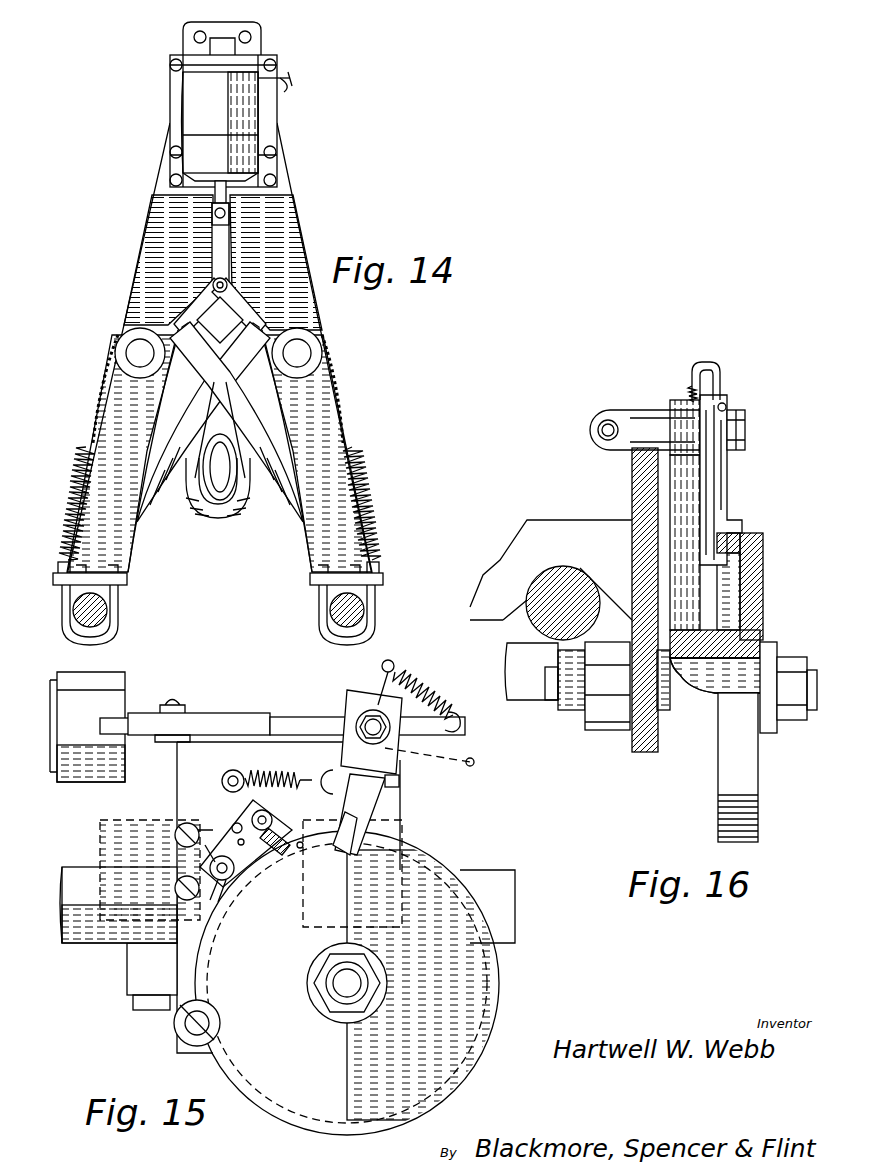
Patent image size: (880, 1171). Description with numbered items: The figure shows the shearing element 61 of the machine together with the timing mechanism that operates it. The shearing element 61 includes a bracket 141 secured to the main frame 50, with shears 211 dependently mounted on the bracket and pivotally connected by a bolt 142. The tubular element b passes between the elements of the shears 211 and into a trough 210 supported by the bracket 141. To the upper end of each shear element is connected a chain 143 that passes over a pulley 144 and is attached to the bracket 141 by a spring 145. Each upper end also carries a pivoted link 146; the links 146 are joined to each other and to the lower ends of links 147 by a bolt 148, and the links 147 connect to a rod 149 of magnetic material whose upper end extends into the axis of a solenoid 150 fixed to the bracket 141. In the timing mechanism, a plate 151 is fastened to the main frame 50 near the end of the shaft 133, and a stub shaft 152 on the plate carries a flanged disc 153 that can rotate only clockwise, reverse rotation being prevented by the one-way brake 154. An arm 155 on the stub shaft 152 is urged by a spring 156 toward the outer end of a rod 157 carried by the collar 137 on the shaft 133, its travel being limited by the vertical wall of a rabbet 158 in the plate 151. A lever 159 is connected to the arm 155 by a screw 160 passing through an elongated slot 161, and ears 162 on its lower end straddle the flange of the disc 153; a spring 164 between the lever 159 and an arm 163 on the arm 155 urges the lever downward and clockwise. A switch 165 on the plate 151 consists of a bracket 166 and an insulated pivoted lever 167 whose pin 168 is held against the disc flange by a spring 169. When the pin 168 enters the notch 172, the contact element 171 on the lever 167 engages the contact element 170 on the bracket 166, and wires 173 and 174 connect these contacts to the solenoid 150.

In FIG. 14, the shearing element 61 is at (292, 239).
In FIG. 14, the solenoid 150 is at (200, 100).
In FIG. 14, the wire 173 is at (282, 78).
In FIG. 15, the wire 173 is at (176, 838).
In FIG. 14, the wire 174 is at (286, 84).
In FIG. 15, the wire 174 is at (266, 775).
In FIG. 14, the rod 149 is at (228, 200).
In FIG. 14, the links 147 is at (224, 240).
In FIG. 14, the bolt 148 is at (213, 283).
In FIG. 14, the links 146 is at (200, 313).
In FIG. 14, the bracket 141 is at (300, 313).
In FIG. 14, the shears 211 is at (257, 412).
In FIG. 14, the bolt 142 is at (200, 400).
In FIG. 14, the tubular element b is at (229, 485).
In FIG. 14, the trough 210 is at (205, 515).
In FIG. 14, the pulley 144 is at (126, 343).
In FIG. 14, the chain 143 is at (102, 392).
In FIG. 14, the spring 145 is at (88, 453).
In FIG. 14, the main frame 50 is at (108, 612).
In FIG. 16, the main frame 50 is at (553, 585).
In FIG. 15, the main frame 50 is at (492, 870).
In FIG. 16, the rod 157 is at (600, 433).
In FIG. 15, the rod 157 is at (238, 716).
In FIG. 16, the plate 151 is at (640, 488).
In FIG. 15, the plate 151 is at (400, 830).
In FIG. 16, the arm 155 is at (690, 603).
In FIG. 15, the arm 155 is at (385, 800).
In FIG. 16, the lever 159 is at (725, 484).
In FIG. 15, the lever 159 is at (362, 700).
In FIG. 16, the ears 162 is at (745, 555).
In FIG. 15, the ears 162 is at (348, 830).
In FIG. 16, the screw 160 is at (746, 426).
In FIG. 15, the screw 160 is at (364, 722).
In FIG. 16, the elongated slot 161 is at (726, 410).
In FIG. 15, the elongated slot 161 is at (472, 762).
In FIG. 16, the arm 163 is at (716, 375).
In FIG. 15, the arm 163 is at (456, 726).
In FIG. 16, the spring 164 is at (688, 393).
In FIG. 15, the spring 164 is at (402, 679).
In FIG. 16, the stub shaft 152 is at (820, 670).
In FIG. 15, the stub shaft 152 is at (355, 983).
In FIG. 16, the flanged disc 153 is at (745, 780).
In FIG. 15, the flanged disc 153 is at (488, 973).
In FIG. 15, the collar 137 is at (112, 672).
In FIG. 15, the shaft 133 is at (128, 702).
In FIG. 15, the rabbet 158 is at (400, 781).
In FIG. 15, the bracket 166 is at (322, 770).
In FIG. 15, the switch 165 is at (241, 842).
In FIG. 15, the spring 156 is at (300, 845).
In FIG. 15, the contact element 171 is at (280, 836).
In FIG. 15, the contact element 170 is at (282, 846).
In FIG. 15, the pin 168 is at (270, 855).
In FIG. 15, the spring 169 is at (203, 856).
In FIG. 15, the notch 172 is at (245, 866).
In FIG. 15, the lever 167 is at (235, 872).
In FIG. 15, the one-way brake 154 is at (174, 1027).